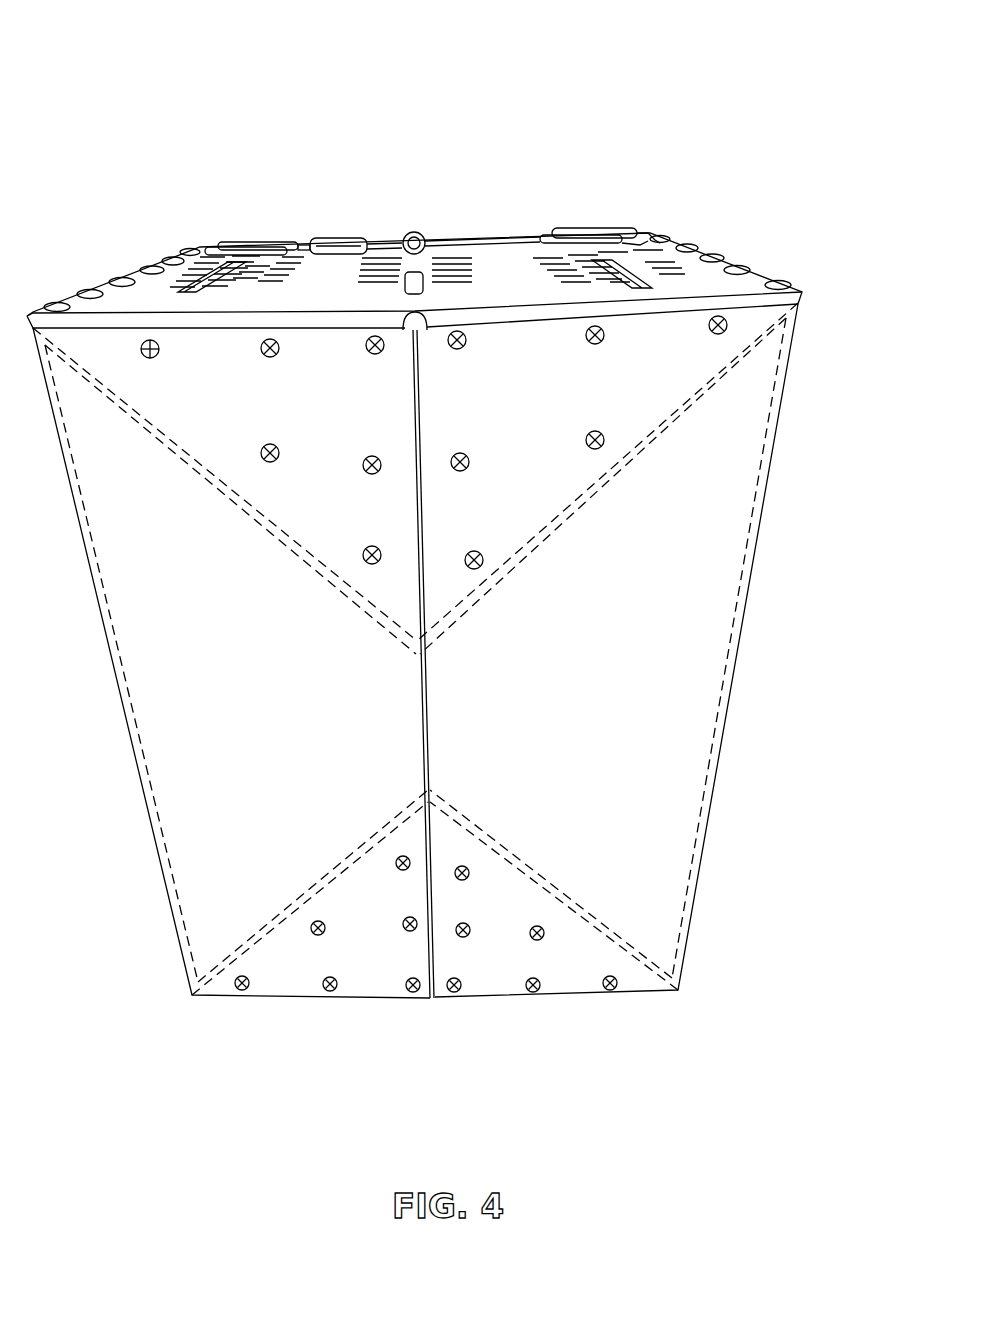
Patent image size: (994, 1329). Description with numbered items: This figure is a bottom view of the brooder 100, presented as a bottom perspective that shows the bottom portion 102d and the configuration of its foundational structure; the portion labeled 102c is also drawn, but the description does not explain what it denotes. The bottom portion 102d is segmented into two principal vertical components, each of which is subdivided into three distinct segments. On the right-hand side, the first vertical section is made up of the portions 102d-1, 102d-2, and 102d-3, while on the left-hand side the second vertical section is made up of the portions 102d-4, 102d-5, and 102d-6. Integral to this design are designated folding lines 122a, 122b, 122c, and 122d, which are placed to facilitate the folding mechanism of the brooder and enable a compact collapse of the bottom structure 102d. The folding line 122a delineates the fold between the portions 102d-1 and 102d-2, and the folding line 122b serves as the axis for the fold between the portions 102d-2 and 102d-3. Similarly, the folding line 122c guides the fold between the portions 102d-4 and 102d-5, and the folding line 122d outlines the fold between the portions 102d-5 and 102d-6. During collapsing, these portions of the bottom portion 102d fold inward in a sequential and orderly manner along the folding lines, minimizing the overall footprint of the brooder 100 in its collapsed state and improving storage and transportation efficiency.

The brooder 100 is at (621, 68).
The lid 102c is at (500, 276).
The bottom portion 102d is at (720, 777).
The portion 102d-1 is at (587, 442).
The portion 102d-2 is at (604, 713).
The portion 102d-3 is at (532, 929).
The portion 102d-4 is at (327, 924).
The portion 102d-5 is at (208, 713).
The portion 102d-6 is at (262, 450).
The folding line 122a is at (595, 488).
The folding line 122b is at (627, 950).
The folding line 122c is at (263, 935).
The folding line 122d is at (147, 425).